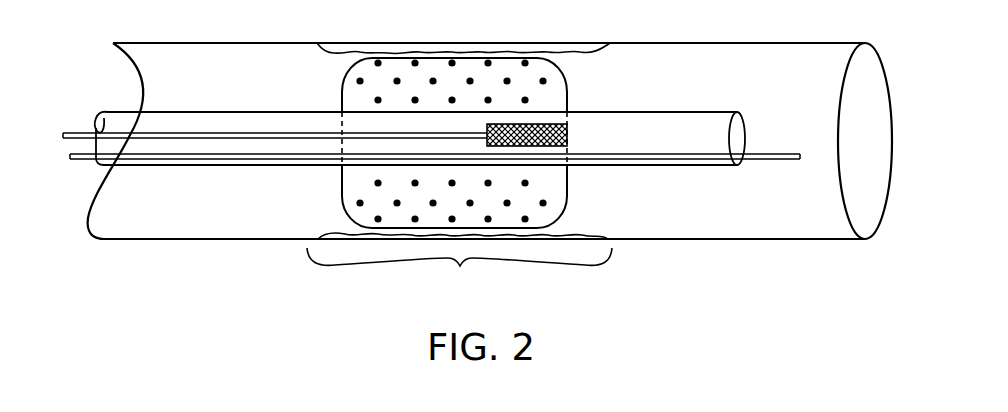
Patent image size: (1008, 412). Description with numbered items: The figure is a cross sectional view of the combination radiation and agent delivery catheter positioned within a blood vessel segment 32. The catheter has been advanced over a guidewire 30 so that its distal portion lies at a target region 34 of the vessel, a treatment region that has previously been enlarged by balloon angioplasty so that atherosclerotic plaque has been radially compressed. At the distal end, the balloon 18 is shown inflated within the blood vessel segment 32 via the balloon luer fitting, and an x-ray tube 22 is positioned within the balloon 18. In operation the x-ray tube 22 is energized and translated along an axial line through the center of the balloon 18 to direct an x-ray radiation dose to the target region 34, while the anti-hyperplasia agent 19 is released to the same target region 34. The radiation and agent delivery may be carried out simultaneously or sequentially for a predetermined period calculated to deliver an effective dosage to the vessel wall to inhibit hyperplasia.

The balloon 18 is at (432, 67).
The agent 19 is at (360, 81).
The x-ray tube 22 is at (512, 125).
The guidewire 30 is at (752, 160).
The blood vessel segment 32 is at (730, 50).
The target region 34 is at (459, 275).